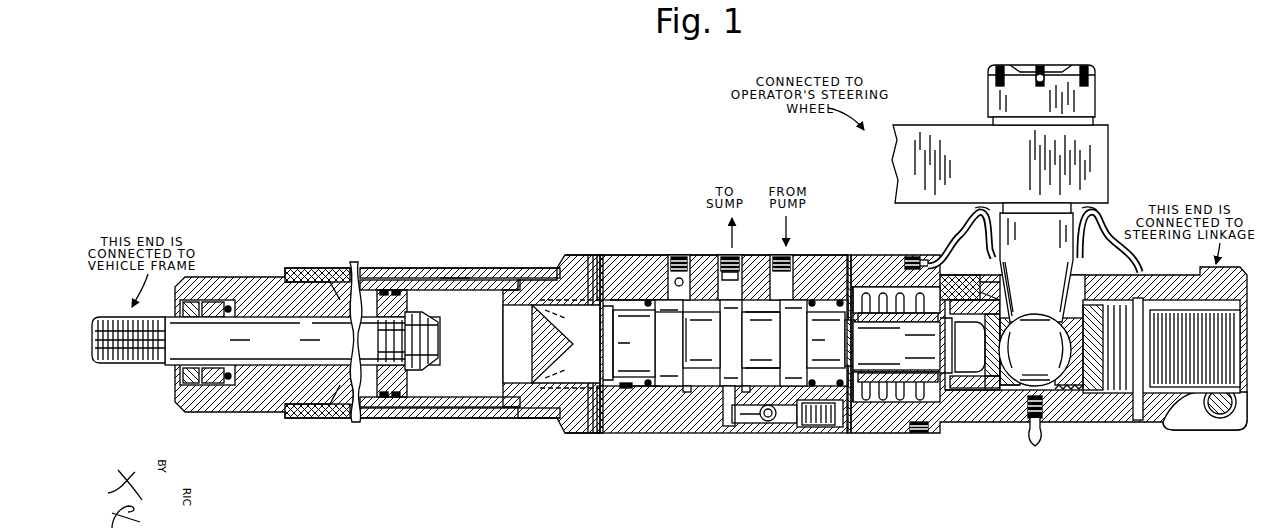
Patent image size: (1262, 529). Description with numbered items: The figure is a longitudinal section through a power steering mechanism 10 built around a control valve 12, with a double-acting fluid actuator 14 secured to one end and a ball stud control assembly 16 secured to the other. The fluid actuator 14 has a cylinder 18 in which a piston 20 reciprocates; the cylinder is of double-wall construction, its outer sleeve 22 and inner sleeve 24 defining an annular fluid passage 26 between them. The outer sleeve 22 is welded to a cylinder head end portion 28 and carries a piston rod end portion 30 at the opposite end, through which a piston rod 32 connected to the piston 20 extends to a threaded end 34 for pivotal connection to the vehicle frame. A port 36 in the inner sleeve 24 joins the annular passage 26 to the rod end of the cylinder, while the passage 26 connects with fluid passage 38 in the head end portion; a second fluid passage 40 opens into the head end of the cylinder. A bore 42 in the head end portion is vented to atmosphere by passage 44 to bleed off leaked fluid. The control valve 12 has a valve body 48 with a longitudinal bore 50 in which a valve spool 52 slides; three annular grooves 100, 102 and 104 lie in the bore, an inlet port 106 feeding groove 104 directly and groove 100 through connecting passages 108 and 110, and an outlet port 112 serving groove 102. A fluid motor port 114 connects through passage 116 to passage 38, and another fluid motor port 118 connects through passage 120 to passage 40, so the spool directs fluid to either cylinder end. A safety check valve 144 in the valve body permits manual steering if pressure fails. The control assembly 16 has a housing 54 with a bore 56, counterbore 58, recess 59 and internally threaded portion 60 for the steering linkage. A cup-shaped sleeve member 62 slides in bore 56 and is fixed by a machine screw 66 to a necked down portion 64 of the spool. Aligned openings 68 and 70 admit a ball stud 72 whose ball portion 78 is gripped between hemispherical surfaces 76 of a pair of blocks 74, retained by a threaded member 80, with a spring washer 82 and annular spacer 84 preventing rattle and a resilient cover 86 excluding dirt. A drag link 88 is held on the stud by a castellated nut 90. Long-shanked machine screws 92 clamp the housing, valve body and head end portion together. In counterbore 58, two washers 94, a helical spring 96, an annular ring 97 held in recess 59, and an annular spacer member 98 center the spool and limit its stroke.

The power steering mechanism 10 is at (624, 185).
The control valve 12 is at (745, 466).
The fluid actuator 14 is at (405, 464).
The ball stud control assembly 16 is at (1027, 466).
The cylinder 18 is at (434, 268).
The piston 20 is at (410, 382).
The outer sleeve 22 is at (452, 268).
The inner sleeve 24 is at (490, 282).
The annular fluid passage 26 is at (373, 268).
The cylinder head end portion 28 is at (577, 266).
The piston rod end portion 30 is at (268, 277).
The piston rod 32 is at (274, 353).
The threaded end 34 is at (98, 317).
The port 36 is at (333, 278).
The fluid passage 38 is at (566, 436).
The fluid passage 40 is at (556, 266).
The bore 42 is at (614, 328).
The passage 44 is at (598, 262).
The valve body 48 is at (647, 405).
The bore 50 is at (626, 390).
The valve spool 52 is at (694, 356).
The housing 54 is at (1122, 400).
The bore 56 is at (1002, 396).
The counterbore 58 is at (895, 400).
The recess 59 is at (848, 425).
The internally threaded portion 60 is at (1190, 420).
The cup-shaped sleeve member 62 is at (978, 396).
The necked down portion 64 is at (872, 351).
The machine screw 66 is at (956, 396).
The opening 68 is at (1066, 272).
The opening 70 is at (1004, 282).
The ball stud 72 is at (975, 212).
The blocks 74 is at (1022, 400).
The hemispherical surface 76 is at (1008, 362).
The ball portion 78 is at (1027, 348).
The member 80 is at (1092, 400).
The spring washer 82 is at (1013, 316).
The annular spacer 84 is at (978, 292).
The resilient cover 86 is at (1028, 242).
The drag link 88 is at (925, 135).
The castellated nut 90 is at (1090, 101).
The machine screws 92 is at (928, 262).
The washers 94 is at (866, 262).
The helical spring 96 is at (870, 400).
The annular ring 97 is at (848, 262).
The annular spacer member 98 is at (942, 352).
The annular groove 100 is at (684, 392).
The annular groove 102 is at (722, 392).
The annular groove 104 is at (798, 428).
The inlet port 106 is at (792, 258).
The connecting passage 108 is at (694, 266).
The connecting passage 110 is at (653, 262).
The outlet port 112 is at (738, 258).
The fluid motor port 114 is at (744, 362).
The longitudinally extending passage 116 is at (670, 372).
The fluid motor port 118 is at (755, 312).
The longitudinally extending fluid passage 120 is at (716, 330).
The safety check valve 144 is at (778, 442).